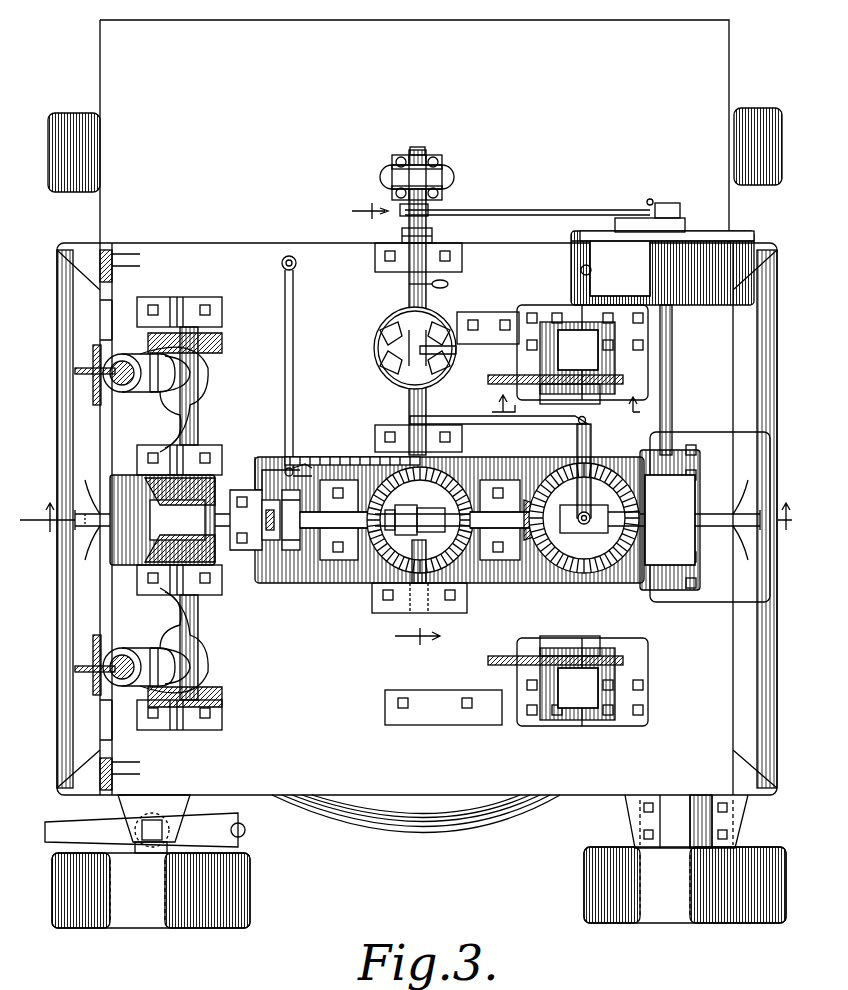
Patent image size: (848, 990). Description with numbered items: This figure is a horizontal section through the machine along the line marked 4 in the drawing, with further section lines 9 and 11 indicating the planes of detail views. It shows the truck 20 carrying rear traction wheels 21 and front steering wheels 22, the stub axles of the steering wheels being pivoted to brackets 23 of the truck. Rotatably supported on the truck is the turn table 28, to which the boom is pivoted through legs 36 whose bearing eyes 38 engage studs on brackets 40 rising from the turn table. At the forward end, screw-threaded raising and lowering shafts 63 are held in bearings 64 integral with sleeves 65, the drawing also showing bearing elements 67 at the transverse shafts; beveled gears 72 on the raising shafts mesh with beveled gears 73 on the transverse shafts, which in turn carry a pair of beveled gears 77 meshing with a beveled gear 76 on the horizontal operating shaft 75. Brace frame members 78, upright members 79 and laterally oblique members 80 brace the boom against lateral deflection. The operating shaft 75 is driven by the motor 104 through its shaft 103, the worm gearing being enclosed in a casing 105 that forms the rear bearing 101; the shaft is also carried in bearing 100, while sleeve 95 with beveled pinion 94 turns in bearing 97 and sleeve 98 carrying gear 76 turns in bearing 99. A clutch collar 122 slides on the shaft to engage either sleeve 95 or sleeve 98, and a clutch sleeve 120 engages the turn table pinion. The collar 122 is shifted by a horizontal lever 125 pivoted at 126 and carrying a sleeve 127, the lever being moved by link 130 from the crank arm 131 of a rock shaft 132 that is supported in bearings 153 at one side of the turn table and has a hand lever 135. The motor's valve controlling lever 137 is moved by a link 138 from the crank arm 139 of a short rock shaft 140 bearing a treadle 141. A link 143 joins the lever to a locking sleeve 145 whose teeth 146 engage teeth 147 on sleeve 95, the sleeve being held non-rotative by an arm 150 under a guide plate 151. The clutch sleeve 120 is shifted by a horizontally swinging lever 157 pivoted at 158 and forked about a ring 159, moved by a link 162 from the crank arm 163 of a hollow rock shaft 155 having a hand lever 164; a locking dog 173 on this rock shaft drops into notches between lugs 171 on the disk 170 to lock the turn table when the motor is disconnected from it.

The section line 4— 4 is at (413, 520).
The section line 9— 9 is at (565, 408).
The section line 11— 11 is at (396, 421).
The truck 20 is at (440, 820).
The rear traction wheels 21 is at (758, 108).
The front steering wheels 22 is at (60, 113).
The brackets 23 is at (130, 822).
The turn table 28 is at (417, 407).
The legs 36 is at (556, 352).
The bearing eyes 38 is at (622, 380).
The brackets 40 is at (582, 515).
The screw-threaded raising and lowering shafts 63 is at (110, 382).
The bearings 64 is at (180, 368).
The sleeves 65 is at (195, 432).
The bearing 67 is at (180, 298).
The beveled gears 72 is at (195, 385).
The beveled gears 73 is at (222, 342).
The horizontal operating shaft 75 is at (480, 565).
The beveled gear 76 is at (200, 520).
The beveled gears 77 is at (150, 480).
The forwardly and obliquely extending members 78 is at (504, 318).
The upright members 79 is at (90, 368).
The laterally oblique members 80 is at (100, 256).
The beveled pinion 94 is at (360, 458).
The sleeve 95 is at (450, 480).
The bearing 97 is at (336, 560).
The sleeve 98 is at (268, 540).
The bearing 99 is at (241, 520).
The bearing 100 is at (505, 480).
The bearing 101 is at (700, 515).
The motor shaft 103 is at (672, 372).
The motor 104 is at (608, 232).
The casing 105 is at (712, 548).
The clutch sleeve 120 is at (612, 560).
The clutch collar 122 is at (258, 465).
The horizontal lever 125 is at (285, 310).
The pivot 126 is at (294, 266).
The sleeve 127 is at (290, 552).
The link 130 is at (312, 458).
The crank arm 131 is at (410, 455).
The rock shaft 132 is at (400, 216).
The hand lever 135 is at (432, 236).
The valve controlling lever 137 is at (674, 203).
The link 138 is at (550, 210).
The crank arm 139 is at (432, 206).
The short rock shaft 140 is at (416, 147).
The double ended foot piece or treadle 141 is at (440, 158).
The link 143 is at (306, 540).
The locking sleeve 145 is at (432, 508).
The teeth or jaws 146 is at (400, 508).
The teeth or jaws 147 is at (380, 560).
The laterally extending arm 150 is at (412, 570).
The guide plate 151 is at (440, 612).
The bearing 153 is at (452, 262).
The hollow rock shaft 155 is at (408, 296).
The horizontally swinging lever 157 is at (592, 440).
The pivot 158 is at (580, 270).
The ring 159 is at (580, 565).
The link 162 is at (462, 414).
The crank arm 163 is at (400, 352).
The hand lever 164 is at (448, 284).
The horizontal disk 170 is at (388, 328).
The lugs 171 is at (378, 345).
The locking dog 173 is at (456, 350).